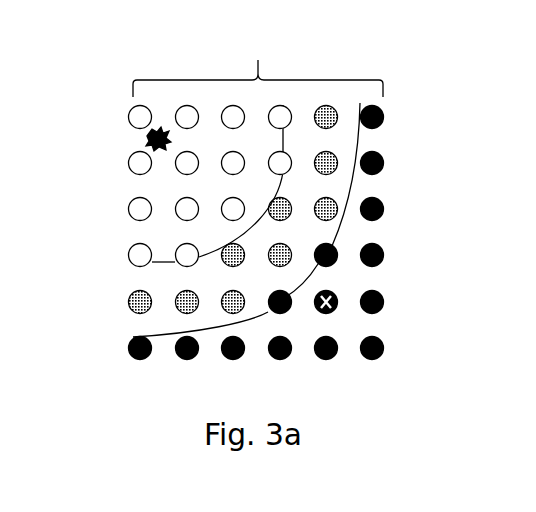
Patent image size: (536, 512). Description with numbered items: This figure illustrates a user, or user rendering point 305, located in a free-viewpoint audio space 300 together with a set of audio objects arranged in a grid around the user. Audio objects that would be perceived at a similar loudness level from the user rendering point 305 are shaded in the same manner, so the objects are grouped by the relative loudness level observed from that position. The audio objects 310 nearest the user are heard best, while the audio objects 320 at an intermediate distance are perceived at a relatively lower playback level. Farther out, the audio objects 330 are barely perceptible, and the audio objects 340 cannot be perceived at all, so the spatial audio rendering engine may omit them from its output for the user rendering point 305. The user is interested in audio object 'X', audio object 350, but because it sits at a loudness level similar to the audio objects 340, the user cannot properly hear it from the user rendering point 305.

The free-viewpoint audio space 300 is at (208, 79).
The user rendering point 305 is at (152, 138).
The audio objects 310 is at (137, 205).
The audio objects 320 is at (138, 299).
The audio objects 330 is at (337, 248).
The audio objects 340 is at (140, 350).
The audio object 'X' 350 is at (336, 294).